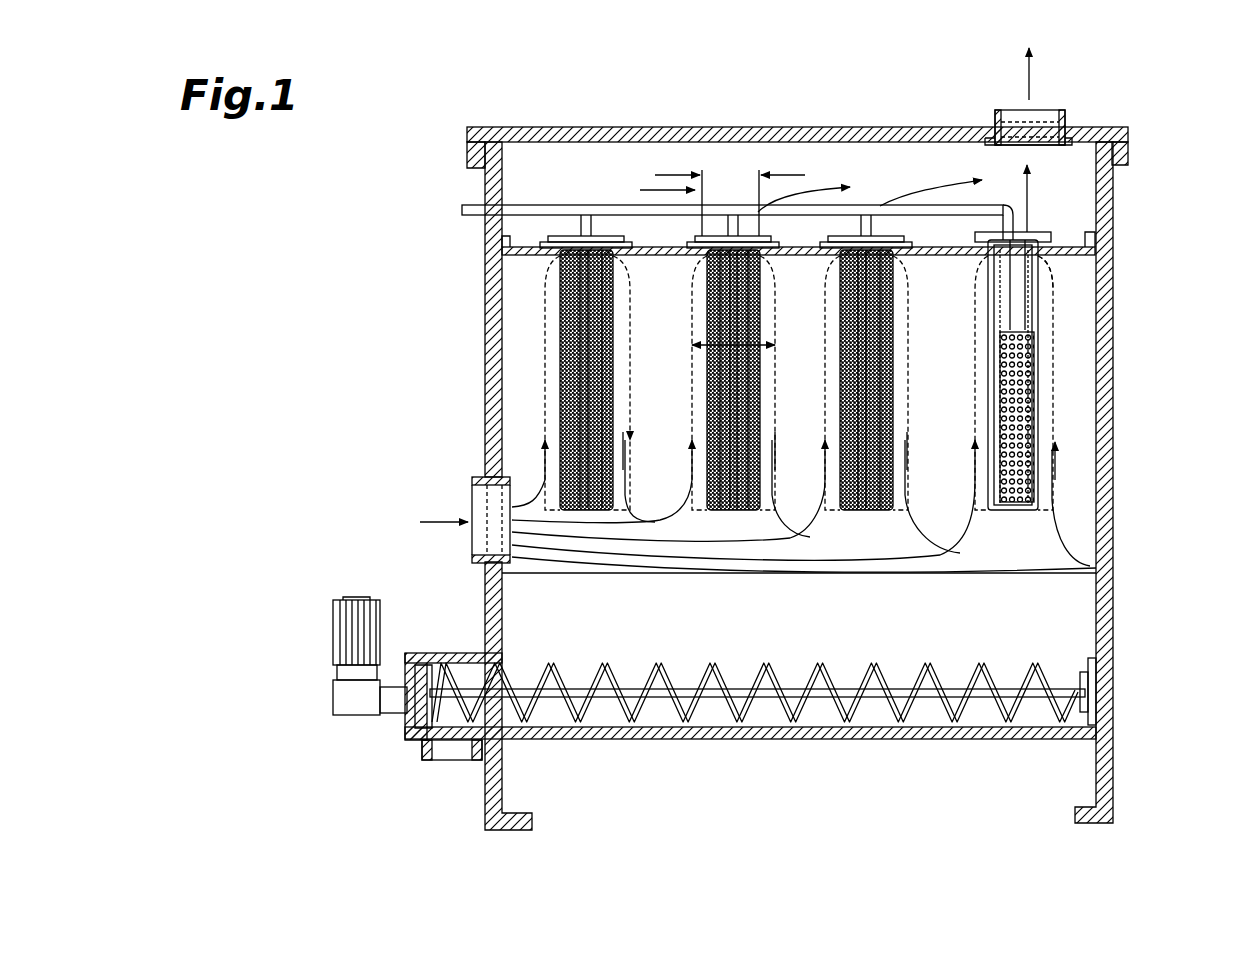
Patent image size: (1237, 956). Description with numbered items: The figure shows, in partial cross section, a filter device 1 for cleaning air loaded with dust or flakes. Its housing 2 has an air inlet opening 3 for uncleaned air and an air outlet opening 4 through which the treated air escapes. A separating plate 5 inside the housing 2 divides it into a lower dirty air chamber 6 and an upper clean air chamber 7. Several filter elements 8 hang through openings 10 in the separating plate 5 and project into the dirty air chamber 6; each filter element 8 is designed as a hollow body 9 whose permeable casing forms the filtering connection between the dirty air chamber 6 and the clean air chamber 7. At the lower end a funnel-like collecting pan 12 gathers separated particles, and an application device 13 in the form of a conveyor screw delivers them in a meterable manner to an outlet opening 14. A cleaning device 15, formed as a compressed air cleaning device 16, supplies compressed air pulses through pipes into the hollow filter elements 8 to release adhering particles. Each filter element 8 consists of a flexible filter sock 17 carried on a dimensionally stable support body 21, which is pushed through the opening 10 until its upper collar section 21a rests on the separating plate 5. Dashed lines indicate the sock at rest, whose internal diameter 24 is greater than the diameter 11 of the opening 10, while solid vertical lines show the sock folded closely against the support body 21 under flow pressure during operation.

The filter device 1 is at (490, 113).
The housing 2 is at (485, 296).
The air inlet opening 3 is at (482, 556).
The air outlet opening 4 is at (1052, 130).
The separating plate 5 is at (648, 260).
The dirty air chamber 6 is at (1065, 372).
The clean air chamber 7 is at (1068, 187).
The filter element 8 is at (550, 385).
The hollow body 9 is at (1032, 392).
The opening 10 is at (600, 232).
The diameter of the opening 11 is at (720, 170).
The collecting pan 12 is at (1062, 642).
The application device 13 is at (670, 712).
The outlet opening 14 is at (438, 770).
The cleaning device 15 is at (520, 204).
The compressed air cleaning device 16 is at (536, 210).
The filter sock 17 is at (778, 420).
The support body 21 is at (1022, 278).
The upper collar section 21a is at (738, 240).
The internal diameter 24 is at (742, 340).